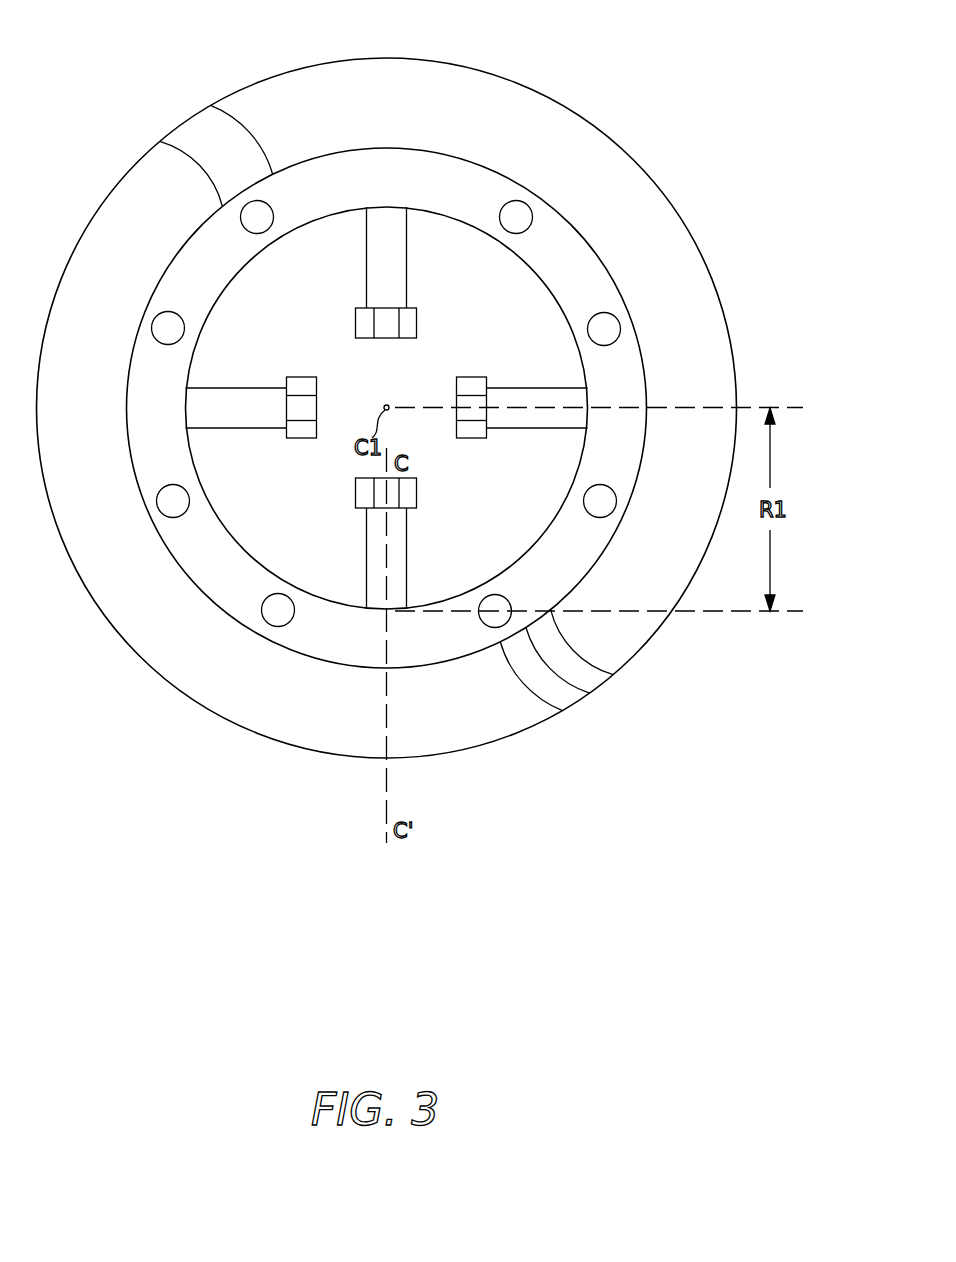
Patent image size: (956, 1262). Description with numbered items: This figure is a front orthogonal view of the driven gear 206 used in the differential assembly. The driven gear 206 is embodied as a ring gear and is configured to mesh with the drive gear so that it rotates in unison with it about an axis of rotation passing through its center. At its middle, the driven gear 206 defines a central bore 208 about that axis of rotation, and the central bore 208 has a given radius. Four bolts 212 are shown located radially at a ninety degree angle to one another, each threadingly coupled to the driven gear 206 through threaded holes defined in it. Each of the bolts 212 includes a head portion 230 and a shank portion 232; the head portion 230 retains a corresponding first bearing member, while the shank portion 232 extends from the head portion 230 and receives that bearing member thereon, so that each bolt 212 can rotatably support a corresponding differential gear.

The driven gear 206 is at (527, 89).
The central bore 208 is at (377, 384).
The bolts 212 is at (387, 408).
The head portion 230 is at (363, 322).
The shank portion 232 is at (378, 538).